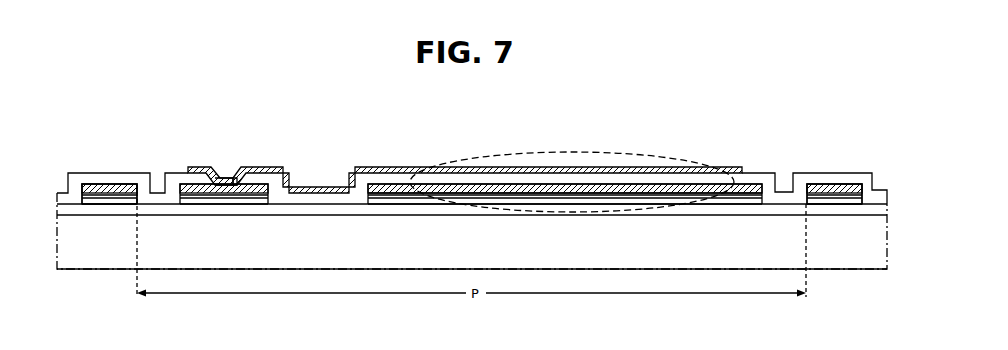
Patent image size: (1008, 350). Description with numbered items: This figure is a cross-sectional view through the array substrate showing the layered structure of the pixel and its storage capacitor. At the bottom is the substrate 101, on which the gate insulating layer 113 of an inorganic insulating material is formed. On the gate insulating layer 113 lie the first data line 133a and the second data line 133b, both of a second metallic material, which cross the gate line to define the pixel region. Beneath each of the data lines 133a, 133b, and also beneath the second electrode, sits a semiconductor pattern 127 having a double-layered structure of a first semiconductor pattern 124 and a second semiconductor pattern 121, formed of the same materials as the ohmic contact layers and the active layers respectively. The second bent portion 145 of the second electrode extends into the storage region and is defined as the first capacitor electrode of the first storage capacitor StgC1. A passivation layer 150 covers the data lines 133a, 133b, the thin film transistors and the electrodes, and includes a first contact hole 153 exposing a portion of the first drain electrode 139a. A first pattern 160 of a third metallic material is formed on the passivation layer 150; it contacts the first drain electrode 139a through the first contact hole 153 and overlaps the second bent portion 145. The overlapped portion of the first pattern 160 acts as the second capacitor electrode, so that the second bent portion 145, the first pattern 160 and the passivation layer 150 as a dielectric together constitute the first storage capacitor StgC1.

The substrate 101 is at (883, 264).
The gate insulating layer 113 is at (386, 206).
The second semiconductor pattern 121 is at (90, 204).
The first semiconductor pattern 124 is at (108, 197).
The semiconductor pattern 127 is at (122, 248).
The first data line 133a is at (106, 190).
The second data line 133b is at (828, 186).
The first drain electrode 139a is at (196, 184).
The second bent portion 145 is at (556, 180).
The passivation layer 150 is at (626, 178).
The first contact hole 153 is at (225, 171).
The first pattern 160 is at (484, 166).
The first storage capacitor StgC1 is at (590, 151).